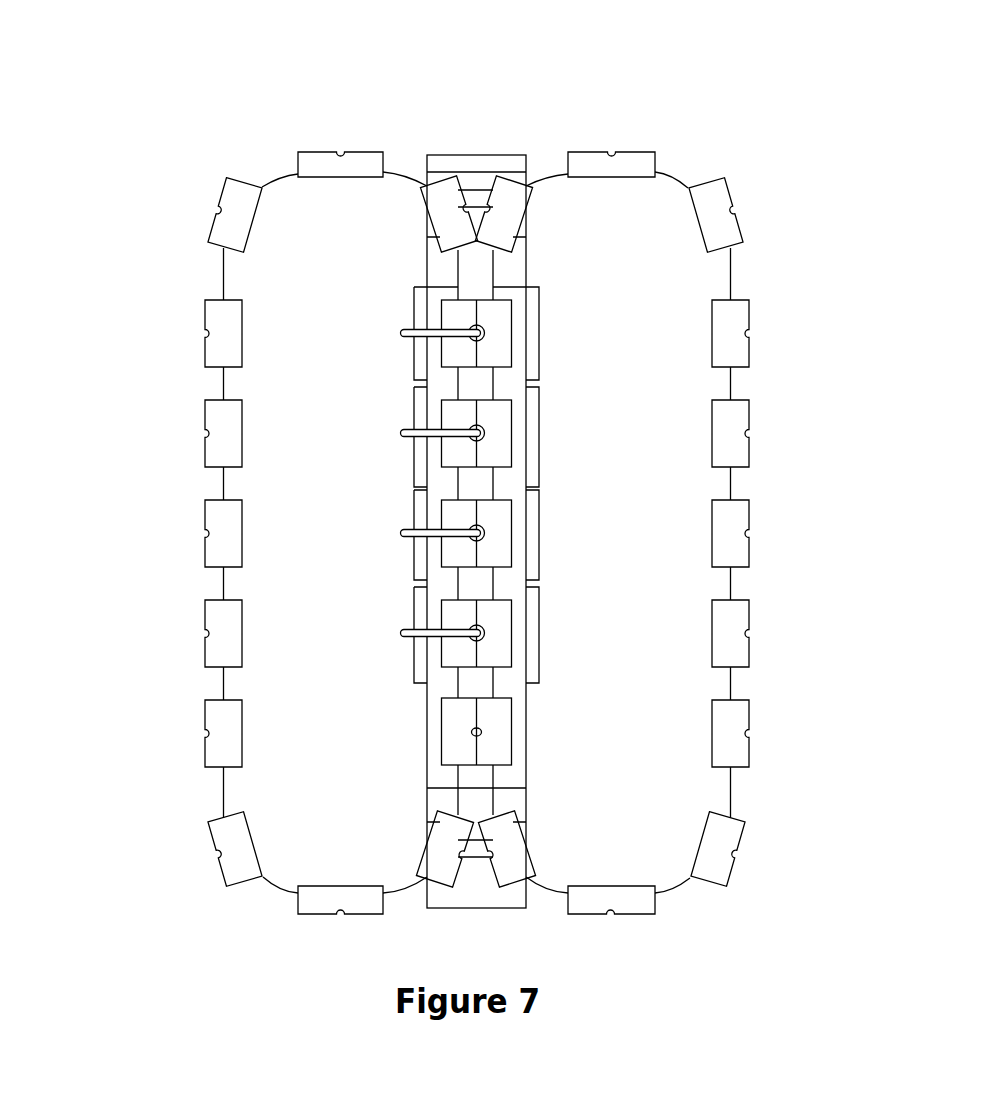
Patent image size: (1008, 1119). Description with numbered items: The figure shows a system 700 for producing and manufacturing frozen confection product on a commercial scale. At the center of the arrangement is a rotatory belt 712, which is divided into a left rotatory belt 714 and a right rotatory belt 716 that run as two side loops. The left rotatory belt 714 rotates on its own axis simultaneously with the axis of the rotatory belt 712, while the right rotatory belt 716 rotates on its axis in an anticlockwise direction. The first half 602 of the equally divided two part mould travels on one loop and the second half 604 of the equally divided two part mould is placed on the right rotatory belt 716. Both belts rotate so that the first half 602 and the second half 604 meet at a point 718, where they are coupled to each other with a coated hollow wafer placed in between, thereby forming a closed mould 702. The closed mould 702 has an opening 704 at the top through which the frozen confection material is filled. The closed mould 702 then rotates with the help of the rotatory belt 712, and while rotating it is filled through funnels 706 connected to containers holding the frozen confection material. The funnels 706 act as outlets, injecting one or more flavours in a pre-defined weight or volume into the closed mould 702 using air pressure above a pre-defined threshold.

The system 700 is at (156, 46).
The right rotatory belt 716 is at (219, 181).
The second half of the equally divided two part mould 604 is at (188, 237).
The rotatory belt 712 is at (517, 180).
The left rotatory belt 714 is at (739, 190).
The first half of the equally divided two part mould 602 is at (782, 257).
The funnels 706 is at (391, 582).
The opening 704 is at (453, 689).
The closed mould 702 is at (517, 689).
The point 718 is at (444, 737).